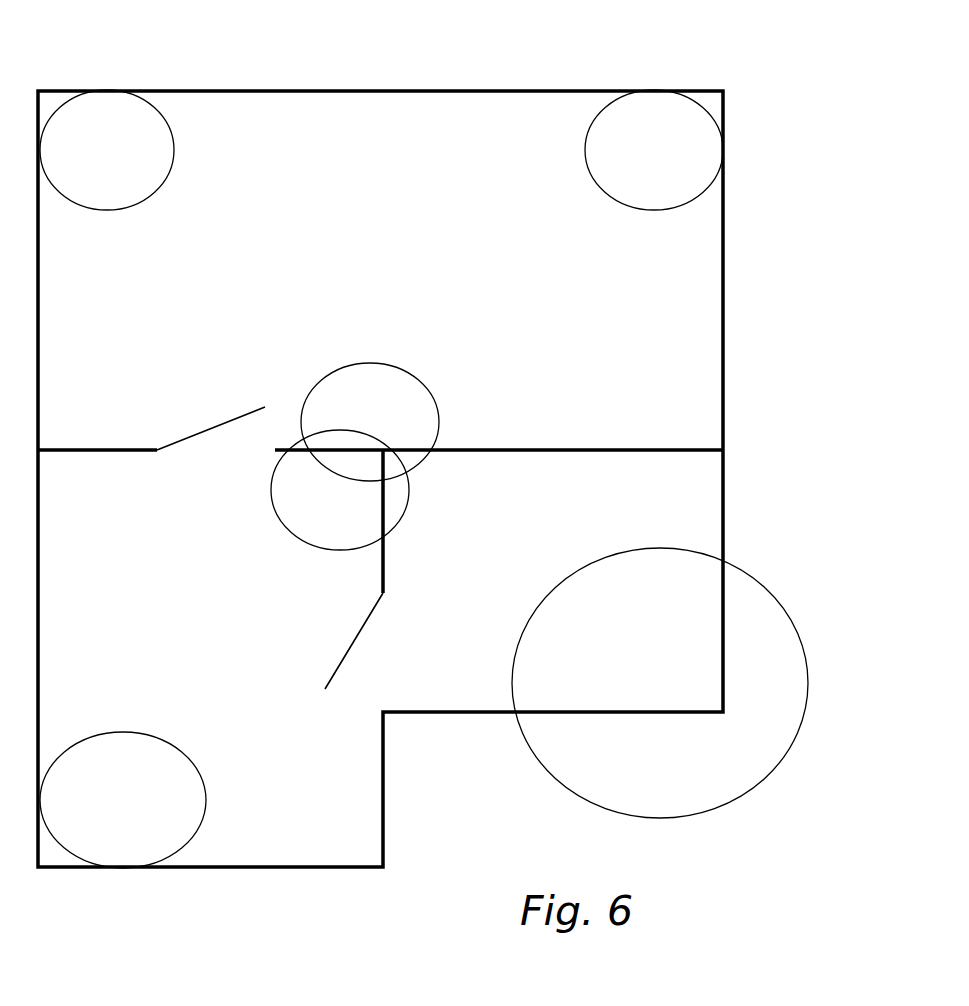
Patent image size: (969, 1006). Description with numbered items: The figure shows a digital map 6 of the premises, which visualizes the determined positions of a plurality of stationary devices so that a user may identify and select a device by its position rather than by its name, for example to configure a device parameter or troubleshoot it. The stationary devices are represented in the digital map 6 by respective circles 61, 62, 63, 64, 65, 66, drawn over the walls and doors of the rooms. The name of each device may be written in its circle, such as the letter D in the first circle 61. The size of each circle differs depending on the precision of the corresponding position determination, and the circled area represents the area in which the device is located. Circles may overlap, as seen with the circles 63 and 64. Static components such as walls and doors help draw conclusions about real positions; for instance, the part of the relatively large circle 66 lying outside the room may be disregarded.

The digital map 6 is at (450, 75).
The first circle 61 is at (653, 127).
The circle 62 is at (108, 125).
The circle 63 is at (403, 382).
The circle 64 is at (290, 505).
The circle 65 is at (120, 826).
The circle 66 is at (582, 775).